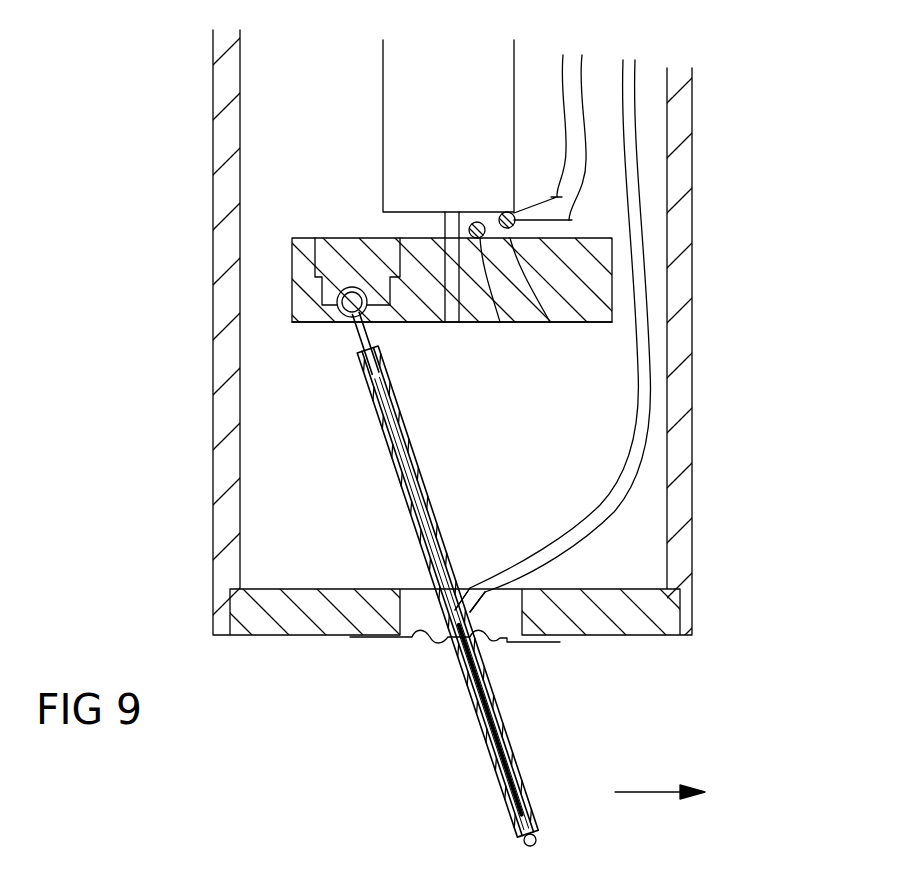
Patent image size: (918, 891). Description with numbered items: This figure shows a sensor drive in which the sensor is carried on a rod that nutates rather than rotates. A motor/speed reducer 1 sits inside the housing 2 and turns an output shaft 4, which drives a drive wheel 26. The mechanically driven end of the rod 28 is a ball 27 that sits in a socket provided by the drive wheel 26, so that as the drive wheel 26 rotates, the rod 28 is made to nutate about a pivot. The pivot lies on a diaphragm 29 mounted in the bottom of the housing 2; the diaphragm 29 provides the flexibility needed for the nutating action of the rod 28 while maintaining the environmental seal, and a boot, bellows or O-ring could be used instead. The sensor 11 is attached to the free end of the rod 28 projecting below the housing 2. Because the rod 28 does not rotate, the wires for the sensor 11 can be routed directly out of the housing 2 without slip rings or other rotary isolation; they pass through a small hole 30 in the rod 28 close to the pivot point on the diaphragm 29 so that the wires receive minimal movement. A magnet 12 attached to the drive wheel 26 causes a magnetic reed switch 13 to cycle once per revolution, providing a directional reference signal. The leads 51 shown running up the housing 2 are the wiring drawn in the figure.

The motor/speed reducer 1 is at (383, 118).
The housing 2 is at (693, 200).
The output shaft 4 is at (445, 230).
The sensor 11 is at (537, 842).
The magnet 12 is at (500, 323).
The magnetic reed switch 13 is at (550, 323).
The drive wheel 26 is at (305, 324).
The ball 27 is at (345, 326).
The rod 28 is at (428, 480).
The diaphragm 29 is at (432, 633).
The small hole 30 is at (540, 566).
The cable 51 is at (638, 413).